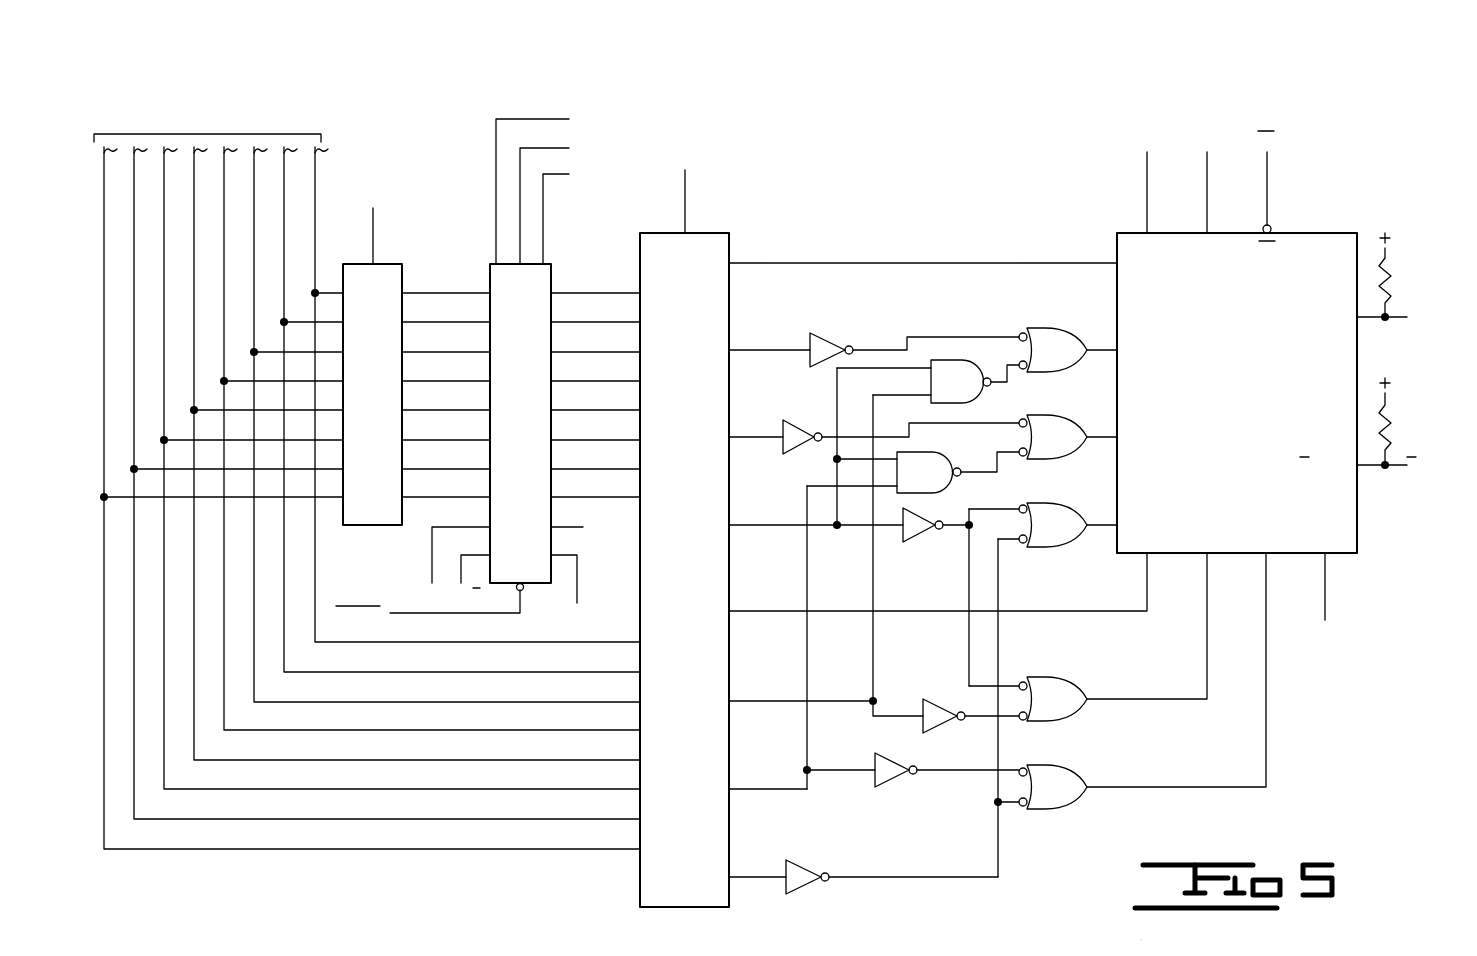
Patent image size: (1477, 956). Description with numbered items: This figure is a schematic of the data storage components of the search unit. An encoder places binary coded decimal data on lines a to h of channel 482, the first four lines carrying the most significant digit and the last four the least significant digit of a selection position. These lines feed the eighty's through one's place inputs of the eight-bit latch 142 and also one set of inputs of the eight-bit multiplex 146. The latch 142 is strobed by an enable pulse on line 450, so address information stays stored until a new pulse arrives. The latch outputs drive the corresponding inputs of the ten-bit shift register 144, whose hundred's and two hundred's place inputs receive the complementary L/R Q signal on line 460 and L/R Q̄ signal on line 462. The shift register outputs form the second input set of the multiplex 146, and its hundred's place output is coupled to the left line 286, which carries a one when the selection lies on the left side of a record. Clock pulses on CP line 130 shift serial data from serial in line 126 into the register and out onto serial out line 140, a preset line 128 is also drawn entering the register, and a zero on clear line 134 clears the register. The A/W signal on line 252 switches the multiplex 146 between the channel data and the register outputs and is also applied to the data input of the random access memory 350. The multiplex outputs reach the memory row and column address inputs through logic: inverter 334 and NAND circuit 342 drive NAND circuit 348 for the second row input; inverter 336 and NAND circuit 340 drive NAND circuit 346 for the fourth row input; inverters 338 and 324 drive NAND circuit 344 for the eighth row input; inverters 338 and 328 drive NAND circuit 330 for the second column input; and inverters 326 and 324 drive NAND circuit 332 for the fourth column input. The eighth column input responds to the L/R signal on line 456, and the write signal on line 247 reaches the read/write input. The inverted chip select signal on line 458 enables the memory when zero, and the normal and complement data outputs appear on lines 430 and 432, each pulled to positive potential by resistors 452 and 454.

The channel 482 is at (210, 134).
The serial in line 126 is at (500, 119).
The preset line 128 is at (520, 163).
The CP line 130 is at (543, 206).
The enable line 450 is at (373, 240).
The 8-bit latch 142 is at (402, 268).
The 10-bit shift register 144 is at (551, 280).
The 8-bit multiplex 146 is at (729, 242).
The A/W line 252 is at (685, 215).
The L/R Q line 460 is at (432, 560).
The L/R Q̄ line 462 is at (461, 572).
The left line 286 is at (568, 536).
The serial out line 140 is at (581, 592).
The clear line 134 is at (420, 614).
The inverter 334 is at (827, 340).
The inverter 336 is at (783, 430).
The inverter 338 is at (905, 543).
The NAND circuit 340 is at (935, 452).
The NAND circuit 342 is at (975, 400).
The NAND circuit 344 is at (1062, 503).
The NAND circuit 346 is at (1062, 415).
The NAND circuit 348 is at (1060, 328).
The inverter 328 is at (955, 669).
The NAND circuit 330 is at (1075, 686).
The NAND circuit 332 is at (1075, 774).
The inverter 326 is at (883, 784).
The inverter 324 is at (806, 866).
The 256-bit random access memory 350 is at (1117, 242).
The write signal line 247 is at (1207, 208).
The chip select line 458 is at (1267, 192).
The resistor 452 is at (1392, 272).
The resistor 454 is at (1392, 420).
The data output line 430 is at (1365, 318).
The complement data output line 432 is at (1365, 468).
The L/R line 456 is at (1325, 606).